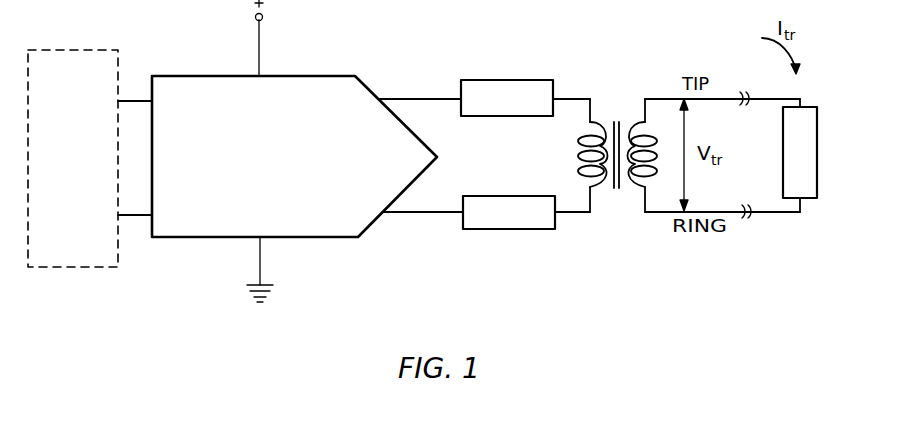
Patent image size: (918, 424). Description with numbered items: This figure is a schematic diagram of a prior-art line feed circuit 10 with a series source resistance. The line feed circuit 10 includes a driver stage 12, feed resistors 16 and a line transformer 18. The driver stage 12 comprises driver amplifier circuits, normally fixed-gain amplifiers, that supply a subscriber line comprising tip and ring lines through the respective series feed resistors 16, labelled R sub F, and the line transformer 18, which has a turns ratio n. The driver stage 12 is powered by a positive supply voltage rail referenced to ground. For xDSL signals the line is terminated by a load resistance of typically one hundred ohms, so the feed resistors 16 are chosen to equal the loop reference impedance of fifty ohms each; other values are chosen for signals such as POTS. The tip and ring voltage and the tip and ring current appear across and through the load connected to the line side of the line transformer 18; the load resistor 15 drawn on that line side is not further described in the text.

The line feed circuit 10 is at (167, 310).
The driver stage 12 is at (340, 240).
The load resistor 15 is at (818, 157).
The feed resistors 16 is at (531, 80).
The line transformer 18 is at (616, 192).